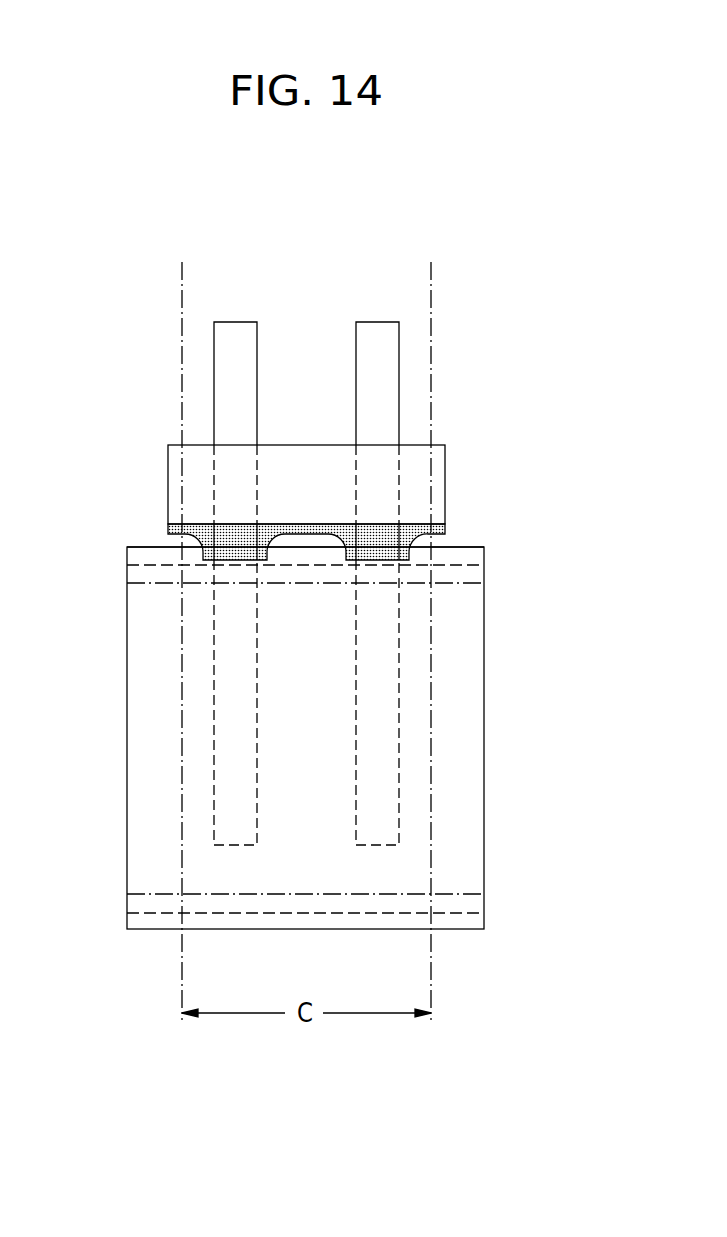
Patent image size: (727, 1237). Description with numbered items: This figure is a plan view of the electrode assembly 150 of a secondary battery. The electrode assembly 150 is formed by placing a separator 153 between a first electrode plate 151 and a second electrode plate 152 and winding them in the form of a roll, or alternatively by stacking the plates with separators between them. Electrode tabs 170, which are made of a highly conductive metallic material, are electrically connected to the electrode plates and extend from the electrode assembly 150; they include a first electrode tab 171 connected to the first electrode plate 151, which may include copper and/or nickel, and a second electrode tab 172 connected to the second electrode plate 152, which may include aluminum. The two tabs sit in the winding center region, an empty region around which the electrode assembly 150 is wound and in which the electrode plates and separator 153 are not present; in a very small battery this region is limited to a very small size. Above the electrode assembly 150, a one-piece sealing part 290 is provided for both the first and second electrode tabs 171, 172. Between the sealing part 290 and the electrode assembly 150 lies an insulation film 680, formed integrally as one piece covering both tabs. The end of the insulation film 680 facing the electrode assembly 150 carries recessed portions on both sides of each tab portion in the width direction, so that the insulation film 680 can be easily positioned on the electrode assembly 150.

The electrode assembly 150 is at (327, 748).
The first electrode plate 151 is at (477, 565).
The second electrode plate 152 is at (477, 583).
The separator 153 is at (477, 547).
The electrode tab 170 is at (307, 518).
The first electrode tab 171 is at (227, 328).
The second electrode tab 172 is at (380, 545).
The sealing part 290 is at (170, 492).
The insulation film 680 is at (170, 525).